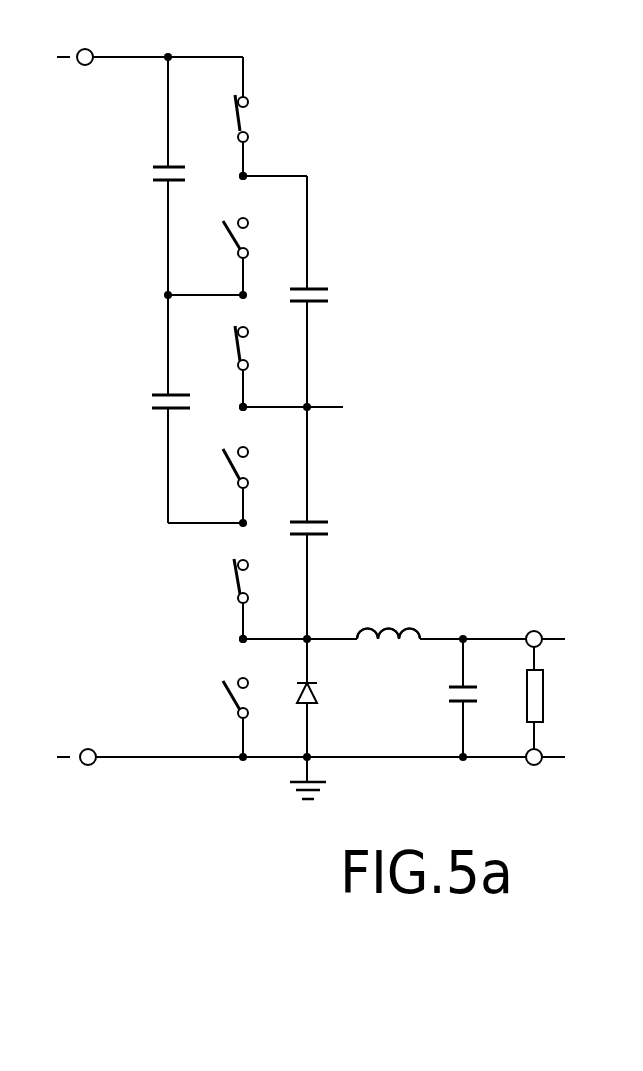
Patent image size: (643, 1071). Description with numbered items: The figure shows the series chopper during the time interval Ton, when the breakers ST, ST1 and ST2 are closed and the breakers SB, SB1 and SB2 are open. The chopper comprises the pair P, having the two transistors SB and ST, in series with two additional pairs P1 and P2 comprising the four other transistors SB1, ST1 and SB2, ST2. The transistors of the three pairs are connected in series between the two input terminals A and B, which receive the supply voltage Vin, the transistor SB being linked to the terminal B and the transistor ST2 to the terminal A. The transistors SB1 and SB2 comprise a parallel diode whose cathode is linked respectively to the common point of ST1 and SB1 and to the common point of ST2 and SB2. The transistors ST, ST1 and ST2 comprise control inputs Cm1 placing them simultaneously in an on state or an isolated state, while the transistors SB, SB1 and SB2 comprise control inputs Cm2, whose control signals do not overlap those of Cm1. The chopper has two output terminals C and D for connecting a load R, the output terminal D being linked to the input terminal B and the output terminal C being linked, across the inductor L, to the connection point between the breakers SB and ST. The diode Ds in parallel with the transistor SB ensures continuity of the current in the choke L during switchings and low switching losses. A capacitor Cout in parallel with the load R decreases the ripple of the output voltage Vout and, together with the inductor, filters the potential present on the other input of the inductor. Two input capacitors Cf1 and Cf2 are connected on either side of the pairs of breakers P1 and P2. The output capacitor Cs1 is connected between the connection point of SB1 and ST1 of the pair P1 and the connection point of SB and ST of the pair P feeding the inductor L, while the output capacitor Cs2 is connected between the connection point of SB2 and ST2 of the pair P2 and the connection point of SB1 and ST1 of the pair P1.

The input terminal A is at (90, 49).
The input terminal B is at (88, 766).
The output terminal C is at (534, 631).
The output terminal D is at (530, 766).
The transistor ST2 is at (236, 115).
The transistor SB2 is at (227, 242).
The transistor ST1 is at (235, 342).
The transistor SB1 is at (228, 468).
The transistor ST is at (236, 580).
The transistor SB is at (222, 696).
The input capacitor Cf2 is at (150, 176).
The input capacitor Cf1 is at (150, 405).
The output capacitor Cs2 is at (320, 295).
The output capacitor Cs1 is at (320, 527).
The control input Cm1 is at (300, 119).
The control input Cm2 is at (290, 237).
The additional pair P2 is at (224, 170).
The additional pair P1 is at (224, 398).
The pair P is at (224, 637).
The inductor L is at (385, 630).
The capacitor Cout is at (450, 697).
The load R is at (527, 700).
The diode Ds is at (317, 694).
The supply voltage Vin is at (67, 750).
The output voltage Vout is at (559, 750).